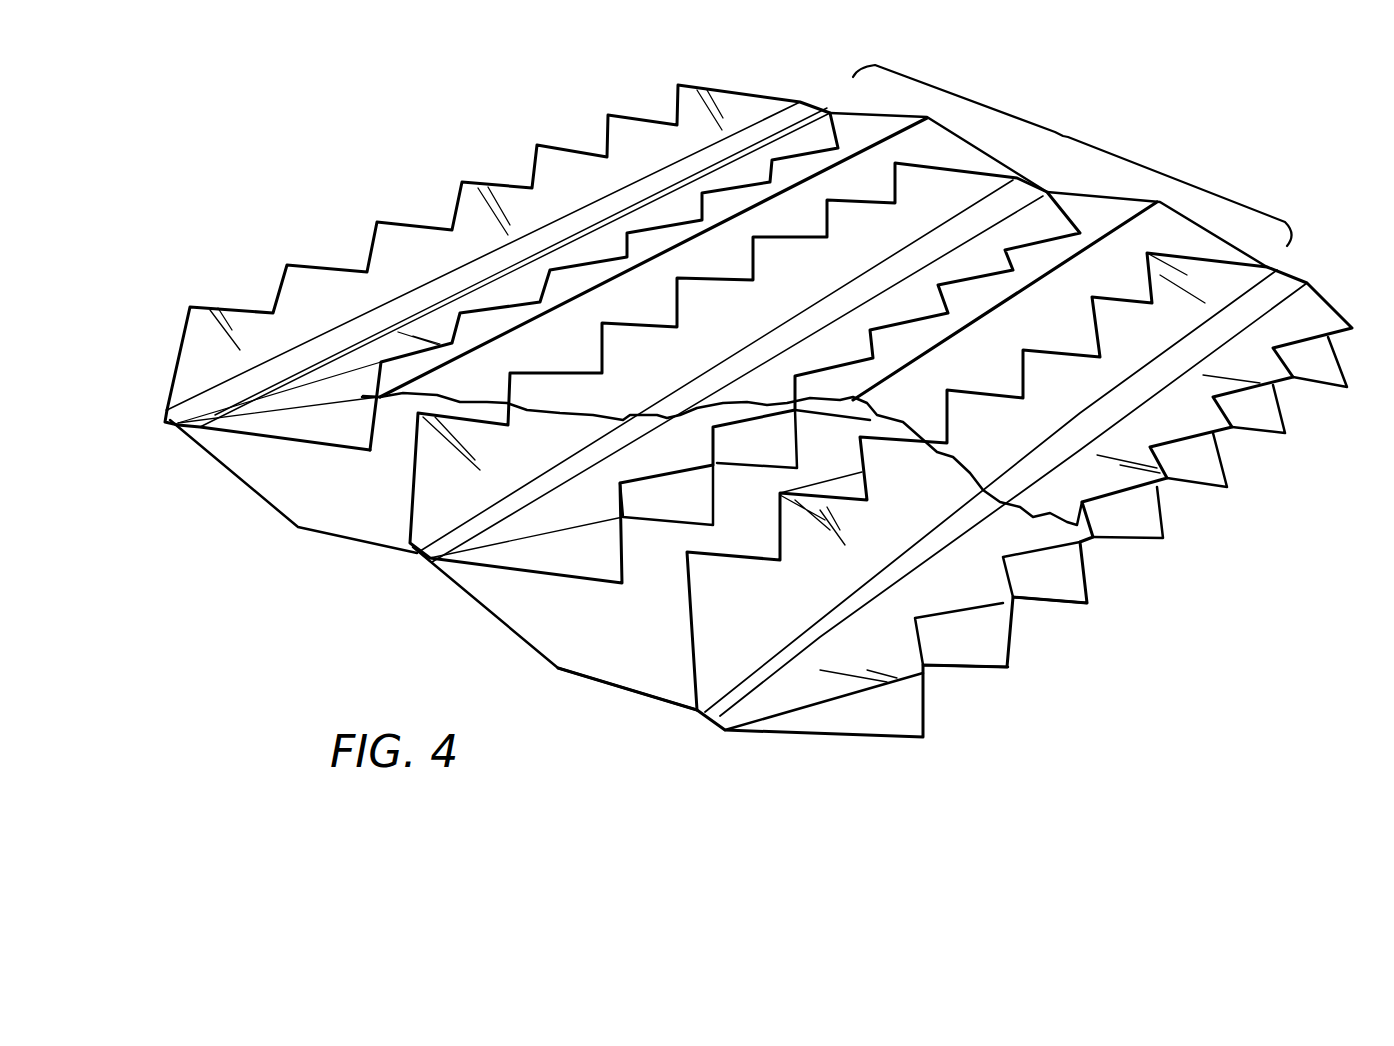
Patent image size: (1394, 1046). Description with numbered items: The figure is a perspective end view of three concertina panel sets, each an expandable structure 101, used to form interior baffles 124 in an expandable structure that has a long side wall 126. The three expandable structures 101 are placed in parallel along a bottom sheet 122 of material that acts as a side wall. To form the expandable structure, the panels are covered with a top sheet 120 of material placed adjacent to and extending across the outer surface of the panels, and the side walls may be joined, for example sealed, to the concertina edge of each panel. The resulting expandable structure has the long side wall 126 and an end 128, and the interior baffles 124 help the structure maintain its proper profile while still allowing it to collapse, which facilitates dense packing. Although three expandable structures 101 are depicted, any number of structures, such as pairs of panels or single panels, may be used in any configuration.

The expandable structure 101 is at (156, 440).
The top sheet 120 is at (1190, 285).
The bottom sheet 122 is at (603, 672).
The interior baffle 124 is at (450, 503).
The long side wall 126 is at (1066, 135).
The end 128 is at (1133, 568).